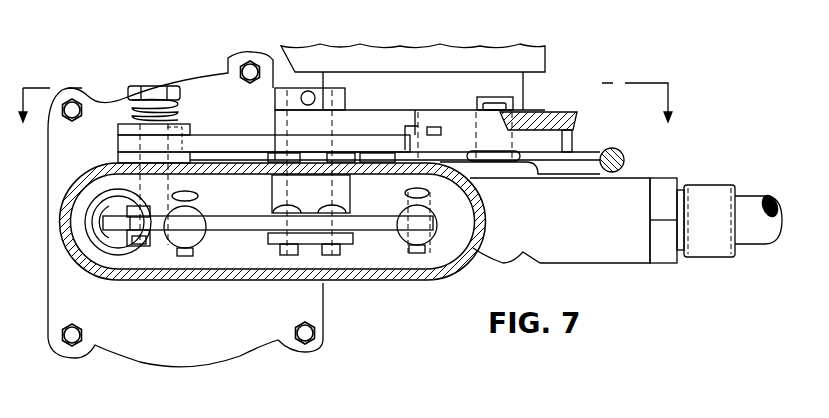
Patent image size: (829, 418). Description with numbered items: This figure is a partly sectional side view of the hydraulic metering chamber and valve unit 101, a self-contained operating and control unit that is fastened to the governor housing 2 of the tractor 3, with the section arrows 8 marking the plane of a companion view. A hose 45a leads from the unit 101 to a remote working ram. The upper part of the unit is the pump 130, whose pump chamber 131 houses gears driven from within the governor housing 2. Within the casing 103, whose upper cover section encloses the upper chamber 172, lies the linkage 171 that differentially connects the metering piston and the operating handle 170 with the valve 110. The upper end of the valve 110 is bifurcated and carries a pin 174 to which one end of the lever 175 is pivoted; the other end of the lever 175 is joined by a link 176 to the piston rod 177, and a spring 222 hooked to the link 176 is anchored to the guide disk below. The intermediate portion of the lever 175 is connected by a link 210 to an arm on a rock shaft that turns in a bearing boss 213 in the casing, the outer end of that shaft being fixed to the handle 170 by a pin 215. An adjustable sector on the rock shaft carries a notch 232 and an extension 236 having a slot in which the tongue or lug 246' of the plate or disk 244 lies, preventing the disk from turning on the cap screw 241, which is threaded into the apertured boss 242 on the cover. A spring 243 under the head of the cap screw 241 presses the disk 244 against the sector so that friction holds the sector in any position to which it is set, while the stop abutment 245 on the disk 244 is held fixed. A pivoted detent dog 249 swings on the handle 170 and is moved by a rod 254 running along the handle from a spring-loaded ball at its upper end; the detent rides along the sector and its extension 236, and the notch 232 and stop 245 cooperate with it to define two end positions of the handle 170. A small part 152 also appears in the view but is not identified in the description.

The governor housing 2 is at (478, 57).
The tractor 3 is at (562, 43).
The section line 8- 8 is at (350, 118).
The hose 45a is at (752, 230).
The hydraulic metering chamber and valve unit 101 is at (382, 328).
The casing 103 is at (135, 353).
The valve 110 is at (440, 242).
The pump 130 is at (533, 88).
The pump chamber 131 is at (423, 87).
The stop 152 is at (423, 130).
The operating handle 170 is at (460, 118).
The linkage 171 is at (258, 235).
The upper chamber 172 is at (372, 257).
The pin 174 is at (407, 193).
The lever 175 is at (236, 226).
The link 176 is at (160, 224).
The piston rod 177 is at (197, 245).
The link 210 is at (308, 240).
The bearing boss 213 is at (276, 198).
The pin 215 is at (315, 98).
The spring 222 is at (97, 243).
The notch 232 is at (410, 147).
The extension 236 is at (237, 143).
The cap screw 241 is at (148, 92).
The apertured boss 242 is at (128, 157).
The spring 243 is at (130, 108).
The plate or disk 244 is at (122, 128).
The stop abutment 245 is at (182, 122).
The tongue or lug 246' is at (173, 189).
The detent dog 249 is at (460, 143).
The rod 254 is at (592, 156).